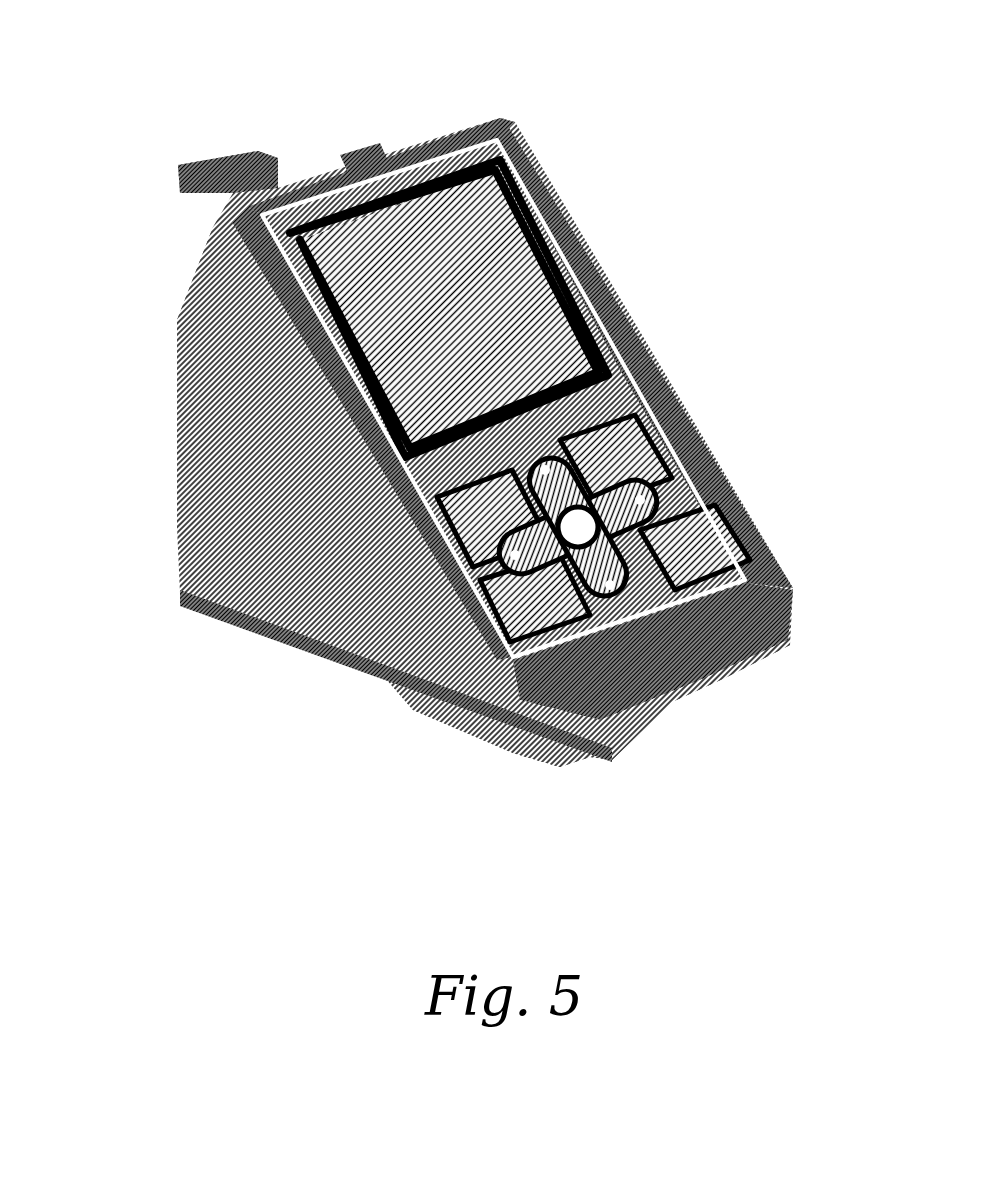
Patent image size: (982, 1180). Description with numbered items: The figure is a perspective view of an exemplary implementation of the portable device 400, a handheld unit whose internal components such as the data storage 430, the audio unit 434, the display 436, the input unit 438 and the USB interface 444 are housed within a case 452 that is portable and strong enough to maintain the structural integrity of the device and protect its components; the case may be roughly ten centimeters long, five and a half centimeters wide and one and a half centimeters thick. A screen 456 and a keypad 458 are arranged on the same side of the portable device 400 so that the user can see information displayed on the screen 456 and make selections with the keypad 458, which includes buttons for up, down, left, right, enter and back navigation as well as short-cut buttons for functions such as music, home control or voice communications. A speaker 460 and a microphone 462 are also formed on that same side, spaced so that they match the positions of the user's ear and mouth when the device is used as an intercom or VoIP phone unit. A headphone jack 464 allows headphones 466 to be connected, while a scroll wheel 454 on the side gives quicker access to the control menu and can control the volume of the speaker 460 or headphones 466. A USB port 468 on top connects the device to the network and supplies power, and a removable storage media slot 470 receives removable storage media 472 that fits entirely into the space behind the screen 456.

The portable device 400 is at (657, 26).
The data storage 430 is at (301, 487).
The audio unit 434 is at (420, 420).
The display 436 is at (560, 308).
The input unit 438 is at (571, 348).
The USB interface 444 is at (381, 126).
The case 452 is at (693, 430).
The scroll wheel 454 is at (570, 218).
The screen 456 is at (553, 363).
The keypad 458 is at (697, 550).
The speaker 460 is at (367, 160).
The microphone 462 is at (682, 690).
The headphone jack 464 is at (187, 192).
The headphones 466 is at (237, 162).
The USB port 468 is at (320, 182).
The removable storage media slot 470 is at (252, 314).
The removable storage media 472 is at (253, 438).